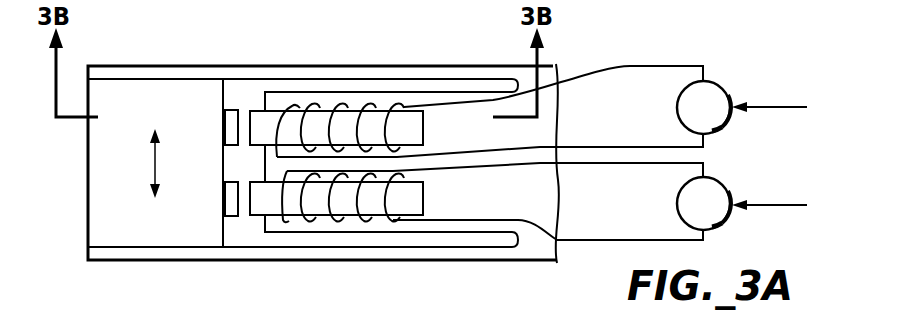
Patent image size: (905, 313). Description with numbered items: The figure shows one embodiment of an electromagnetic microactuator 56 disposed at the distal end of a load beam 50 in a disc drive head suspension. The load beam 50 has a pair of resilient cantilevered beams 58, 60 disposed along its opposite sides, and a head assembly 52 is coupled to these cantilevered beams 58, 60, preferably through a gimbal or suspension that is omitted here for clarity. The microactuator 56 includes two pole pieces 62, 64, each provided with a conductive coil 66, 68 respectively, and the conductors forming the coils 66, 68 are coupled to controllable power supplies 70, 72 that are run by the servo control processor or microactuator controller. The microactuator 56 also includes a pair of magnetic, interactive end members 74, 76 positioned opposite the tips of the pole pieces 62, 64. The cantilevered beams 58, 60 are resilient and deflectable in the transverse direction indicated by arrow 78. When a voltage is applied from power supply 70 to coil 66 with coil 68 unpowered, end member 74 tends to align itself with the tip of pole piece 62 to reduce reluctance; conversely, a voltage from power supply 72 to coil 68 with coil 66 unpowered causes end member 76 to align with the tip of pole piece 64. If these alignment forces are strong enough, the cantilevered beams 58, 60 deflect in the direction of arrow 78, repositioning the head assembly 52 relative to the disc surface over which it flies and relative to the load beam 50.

The load beam 50 is at (528, 252).
The head assembly 52 is at (88, 231).
The electromagnetic microactuator 56 is at (247, 46).
The cantilevered beam 58 is at (383, 70).
The cantilevered beam 60 is at (420, 263).
The pole piece 62 is at (255, 111).
The pole piece 64 is at (257, 212).
The conductive coil 66 is at (290, 107).
The conductive coil 68 is at (333, 208).
The power supply 70 is at (727, 93).
The power supply 72 is at (730, 218).
The end member 74 is at (228, 110).
The end member 76 is at (229, 217).
The arrow 78 is at (152, 163).